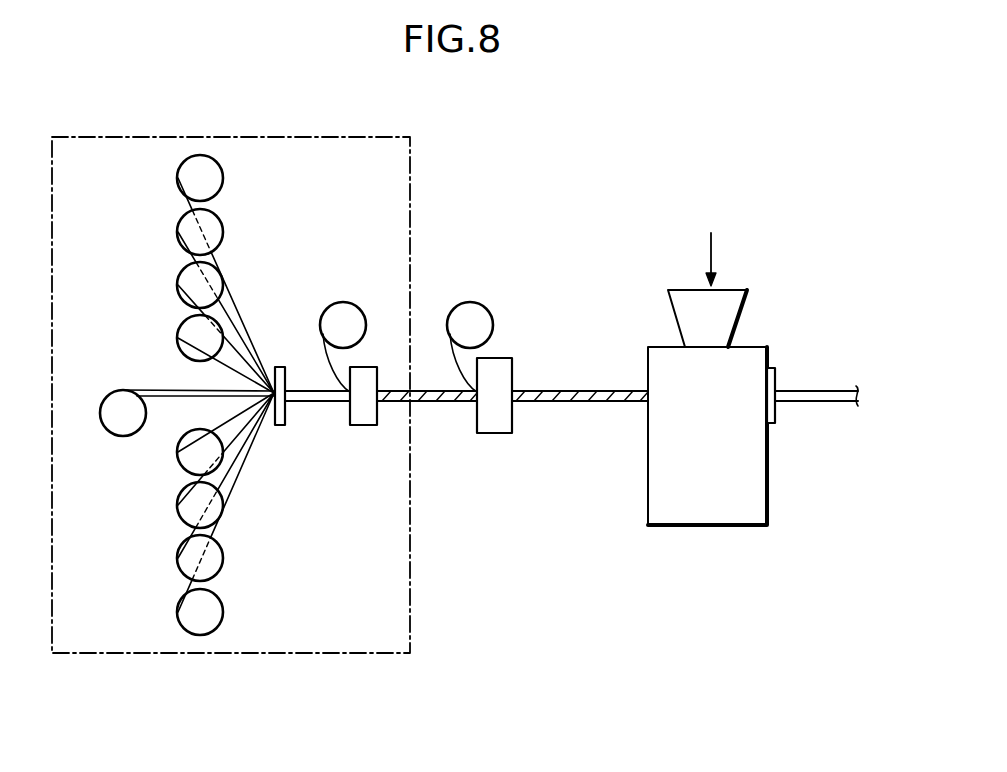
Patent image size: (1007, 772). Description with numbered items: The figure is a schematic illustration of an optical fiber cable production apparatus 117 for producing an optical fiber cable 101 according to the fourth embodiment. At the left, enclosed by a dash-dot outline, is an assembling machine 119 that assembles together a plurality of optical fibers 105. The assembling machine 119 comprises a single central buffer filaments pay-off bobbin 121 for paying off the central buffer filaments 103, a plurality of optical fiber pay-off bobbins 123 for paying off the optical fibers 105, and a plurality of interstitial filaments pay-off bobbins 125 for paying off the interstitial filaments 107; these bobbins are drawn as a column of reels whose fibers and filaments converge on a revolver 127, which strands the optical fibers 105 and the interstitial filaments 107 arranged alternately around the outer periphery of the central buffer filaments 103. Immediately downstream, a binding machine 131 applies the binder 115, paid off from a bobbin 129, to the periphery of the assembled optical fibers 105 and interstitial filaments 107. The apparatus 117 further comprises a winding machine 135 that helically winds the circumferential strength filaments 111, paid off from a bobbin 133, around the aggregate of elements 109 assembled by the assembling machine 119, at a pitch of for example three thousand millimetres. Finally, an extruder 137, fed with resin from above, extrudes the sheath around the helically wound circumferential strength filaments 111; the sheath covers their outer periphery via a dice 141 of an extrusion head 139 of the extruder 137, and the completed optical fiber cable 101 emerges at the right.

The optical fiber cable 101 is at (824, 392).
The central buffer filaments 103 is at (192, 391).
The optical fibers 105 is at (192, 364).
The interstitial filaments 107 is at (236, 322).
The aggregate of elements 109 is at (430, 404).
The circumferential strength filaments 111 is at (455, 372).
The binder 115 is at (330, 370).
The optical fiber cable production apparatus 117 is at (666, 168).
The assembling machine 119 is at (410, 198).
The central buffer filaments pay-off bobbin 121 is at (100, 410).
The optical fiber pay-off bobbins 123 is at (178, 232).
The interstitial filaments pay-off bobbins 125 is at (178, 178).
The revolver 127 is at (283, 427).
The bobbin 129 is at (352, 304).
The binding machine 131 is at (368, 427).
The bobbin 133 is at (474, 303).
The winding machine 135 is at (500, 434).
The extruder 137 is at (668, 346).
The extrusion head 139 is at (777, 372).
The dice 141 is at (776, 413).